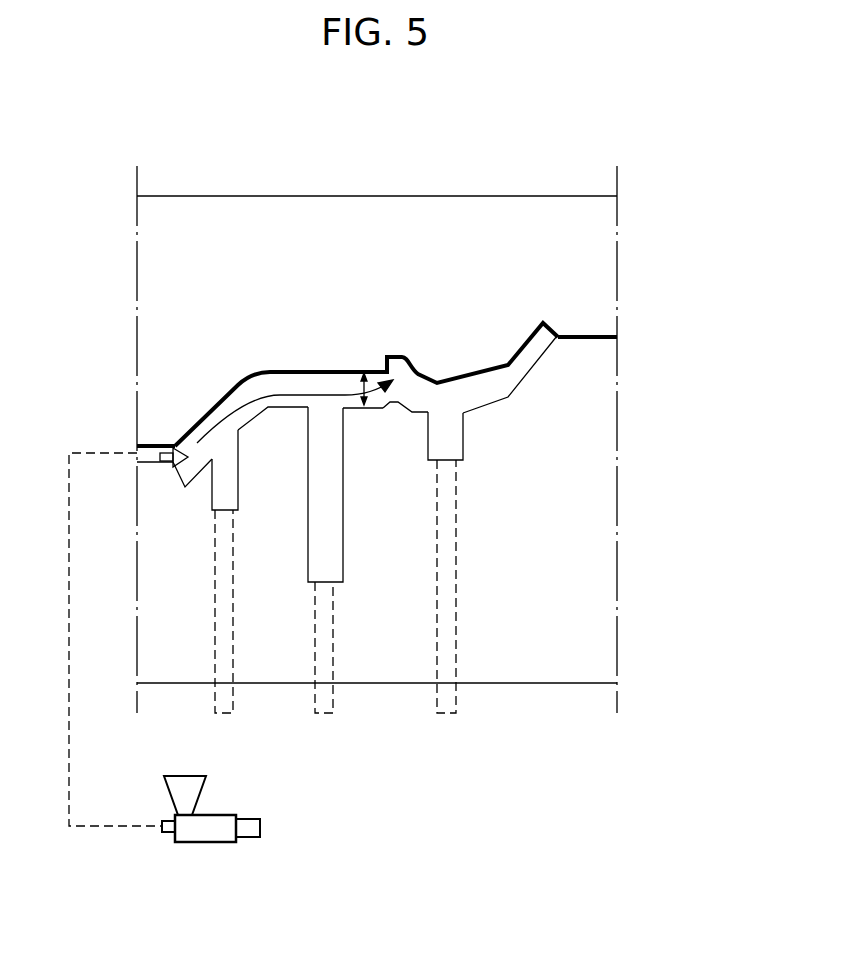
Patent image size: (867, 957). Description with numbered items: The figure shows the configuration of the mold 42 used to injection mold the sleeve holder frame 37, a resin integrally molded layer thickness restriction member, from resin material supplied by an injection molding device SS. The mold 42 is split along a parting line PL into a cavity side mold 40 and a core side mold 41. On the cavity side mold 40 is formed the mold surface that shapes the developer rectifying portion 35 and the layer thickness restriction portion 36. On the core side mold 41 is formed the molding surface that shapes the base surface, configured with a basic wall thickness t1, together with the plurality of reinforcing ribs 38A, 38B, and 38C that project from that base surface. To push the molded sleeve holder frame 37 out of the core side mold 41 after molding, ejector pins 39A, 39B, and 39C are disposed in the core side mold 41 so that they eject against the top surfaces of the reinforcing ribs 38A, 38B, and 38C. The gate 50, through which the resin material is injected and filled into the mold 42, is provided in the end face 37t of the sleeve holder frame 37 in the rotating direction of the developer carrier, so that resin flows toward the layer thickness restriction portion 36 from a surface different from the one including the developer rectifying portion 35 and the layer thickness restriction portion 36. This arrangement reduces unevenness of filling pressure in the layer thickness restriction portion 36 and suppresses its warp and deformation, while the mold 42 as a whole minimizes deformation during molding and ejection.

The developer rectifying portion 35 is at (425, 375).
The layer thickness restriction portion 36 is at (384, 356).
The sleeve holder frame 37 is at (258, 374).
The end face 37t is at (180, 484).
The reinforcing rib 38A is at (328, 560).
The reinforcing rib 38B is at (232, 483).
The reinforcing rib 38C is at (453, 438).
The ejector pin 39A is at (323, 625).
The ejector pin 39B is at (223, 596).
The ejector pin 39C is at (460, 485).
The cavity side mold 40 is at (600, 234).
The core side mold 41 is at (600, 423).
The mold 42 is at (707, 213).
The gate 50 is at (143, 460).
The parting line PL is at (152, 445).
The injection molding device SS is at (201, 842).
The basic wall thickness t1 is at (363, 390).